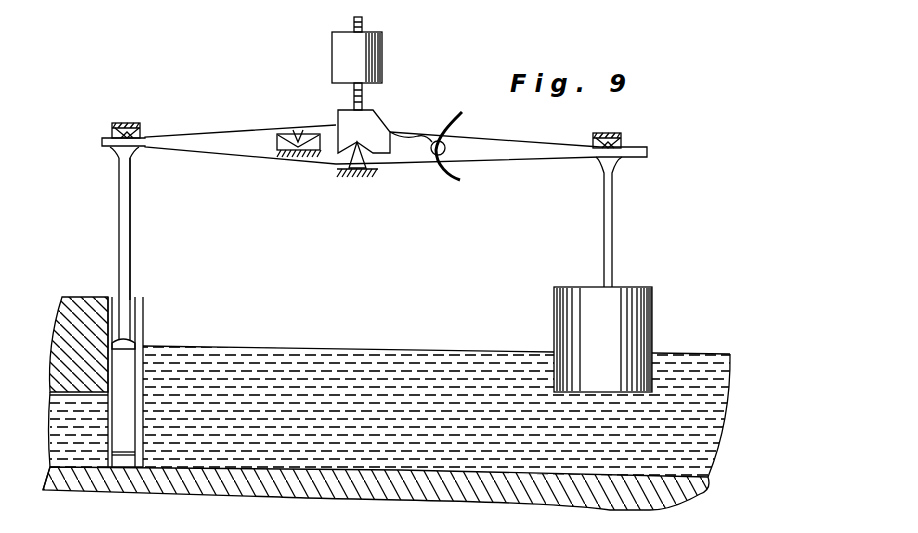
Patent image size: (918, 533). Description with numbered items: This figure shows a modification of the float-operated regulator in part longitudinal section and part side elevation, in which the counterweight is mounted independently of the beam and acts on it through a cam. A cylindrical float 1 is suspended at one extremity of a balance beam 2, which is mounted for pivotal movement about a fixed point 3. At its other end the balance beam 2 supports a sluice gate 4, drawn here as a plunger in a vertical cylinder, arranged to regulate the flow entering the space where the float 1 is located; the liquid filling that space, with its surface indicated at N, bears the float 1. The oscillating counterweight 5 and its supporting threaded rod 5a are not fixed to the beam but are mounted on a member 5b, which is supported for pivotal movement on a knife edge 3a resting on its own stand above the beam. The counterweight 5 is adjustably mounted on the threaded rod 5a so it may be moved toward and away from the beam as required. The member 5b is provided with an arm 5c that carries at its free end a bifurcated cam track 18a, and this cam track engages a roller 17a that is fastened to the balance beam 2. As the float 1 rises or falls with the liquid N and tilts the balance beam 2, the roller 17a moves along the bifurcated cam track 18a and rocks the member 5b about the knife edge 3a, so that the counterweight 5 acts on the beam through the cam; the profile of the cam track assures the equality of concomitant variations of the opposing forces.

The float 1 is at (653, 317).
The balance beam 2 is at (547, 146).
The fixed point 3 is at (295, 133).
The knife edge 3a is at (345, 167).
The sluice gate 4 is at (127, 371).
The counterweight 5 is at (382, 74).
The threaded rod 5a is at (363, 95).
The member 5b is at (380, 125).
The arm 5c is at (415, 136).
The roller 17a is at (446, 141).
The bifurcated cam track 18a is at (463, 115).
The liquid level N is at (452, 350).